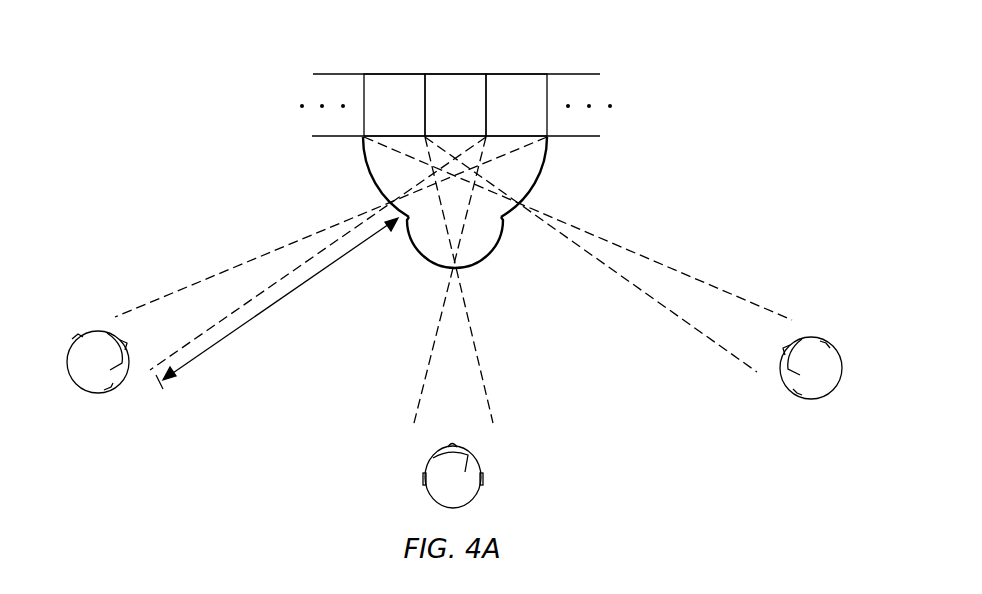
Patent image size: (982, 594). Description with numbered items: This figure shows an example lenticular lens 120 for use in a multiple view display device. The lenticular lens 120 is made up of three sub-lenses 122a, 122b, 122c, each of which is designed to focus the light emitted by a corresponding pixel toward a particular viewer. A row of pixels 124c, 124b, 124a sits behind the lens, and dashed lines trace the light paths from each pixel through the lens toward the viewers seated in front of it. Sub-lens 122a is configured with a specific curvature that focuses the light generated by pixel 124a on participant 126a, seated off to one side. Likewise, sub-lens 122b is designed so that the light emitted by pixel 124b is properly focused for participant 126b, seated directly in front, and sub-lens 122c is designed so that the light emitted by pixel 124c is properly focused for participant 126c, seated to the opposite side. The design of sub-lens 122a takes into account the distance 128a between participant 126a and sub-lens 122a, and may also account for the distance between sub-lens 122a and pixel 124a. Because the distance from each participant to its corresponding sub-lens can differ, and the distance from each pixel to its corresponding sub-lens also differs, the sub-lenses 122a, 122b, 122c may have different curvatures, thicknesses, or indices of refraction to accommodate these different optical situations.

The lenticular lens 120 is at (453, 226).
The sub-lens 122a is at (368, 171).
The sub-lens 122b is at (478, 245).
The sub-lens 122c is at (543, 172).
The pixel 124a is at (517, 74).
The pixel 124b is at (455, 74).
The pixel 124c is at (395, 74).
The participant 126a is at (95, 392).
The participant 126b is at (484, 480).
The participant 126c is at (817, 399).
The distance 128a is at (273, 300).